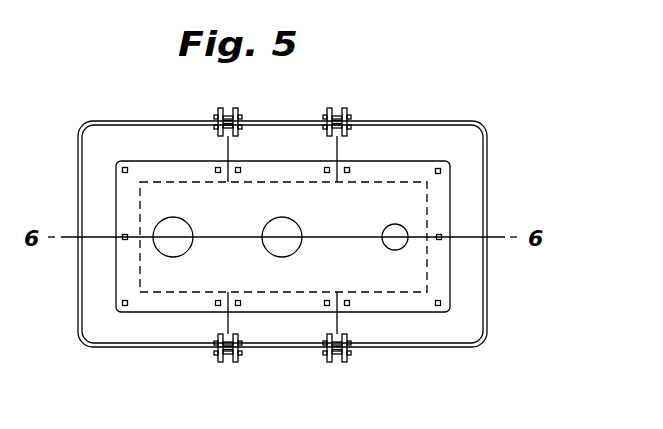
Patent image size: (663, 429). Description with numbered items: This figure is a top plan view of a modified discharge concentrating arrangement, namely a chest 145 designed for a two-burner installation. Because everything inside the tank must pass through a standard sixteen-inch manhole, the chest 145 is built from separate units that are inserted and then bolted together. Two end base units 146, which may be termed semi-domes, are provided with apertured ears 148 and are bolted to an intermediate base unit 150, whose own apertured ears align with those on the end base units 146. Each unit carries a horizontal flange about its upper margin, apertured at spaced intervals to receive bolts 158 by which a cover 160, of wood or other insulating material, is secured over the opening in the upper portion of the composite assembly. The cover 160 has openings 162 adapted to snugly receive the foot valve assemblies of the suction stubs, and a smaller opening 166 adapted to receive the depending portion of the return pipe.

The chest 145 is at (502, 187).
The end base unit 146 is at (103, 136).
The apertured ears 148 is at (340, 112).
The intermediate base unit 150 is at (293, 133).
The bolts 158 is at (330, 175).
The cover 160 is at (414, 304).
The openings 162 is at (268, 231).
The smaller opening 166 is at (392, 248).